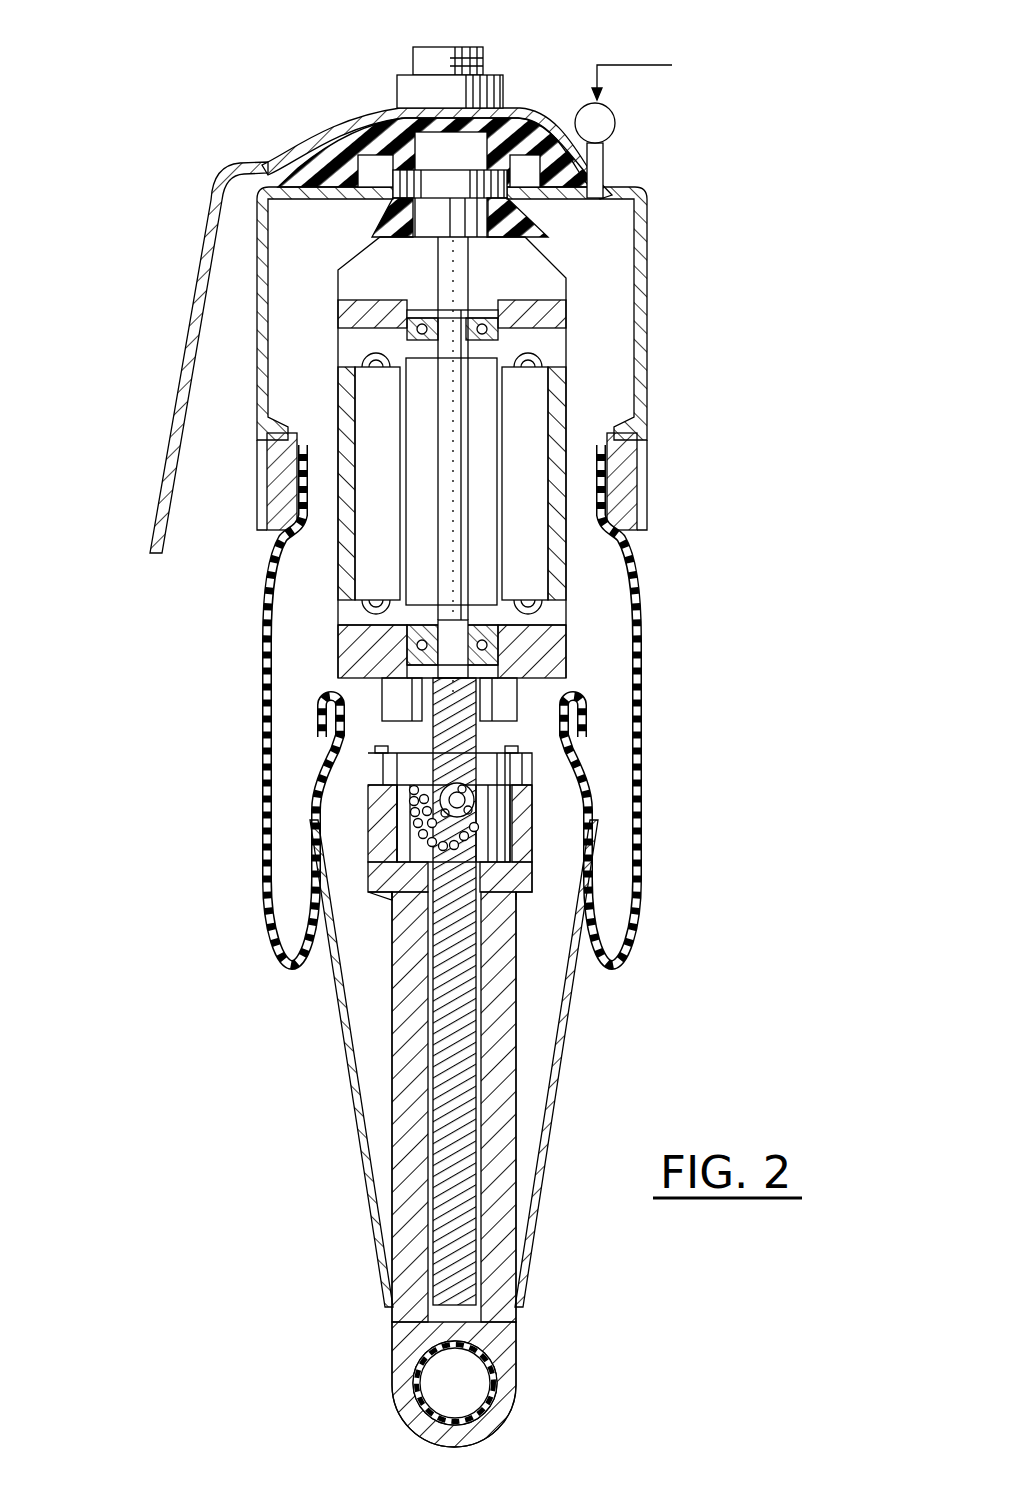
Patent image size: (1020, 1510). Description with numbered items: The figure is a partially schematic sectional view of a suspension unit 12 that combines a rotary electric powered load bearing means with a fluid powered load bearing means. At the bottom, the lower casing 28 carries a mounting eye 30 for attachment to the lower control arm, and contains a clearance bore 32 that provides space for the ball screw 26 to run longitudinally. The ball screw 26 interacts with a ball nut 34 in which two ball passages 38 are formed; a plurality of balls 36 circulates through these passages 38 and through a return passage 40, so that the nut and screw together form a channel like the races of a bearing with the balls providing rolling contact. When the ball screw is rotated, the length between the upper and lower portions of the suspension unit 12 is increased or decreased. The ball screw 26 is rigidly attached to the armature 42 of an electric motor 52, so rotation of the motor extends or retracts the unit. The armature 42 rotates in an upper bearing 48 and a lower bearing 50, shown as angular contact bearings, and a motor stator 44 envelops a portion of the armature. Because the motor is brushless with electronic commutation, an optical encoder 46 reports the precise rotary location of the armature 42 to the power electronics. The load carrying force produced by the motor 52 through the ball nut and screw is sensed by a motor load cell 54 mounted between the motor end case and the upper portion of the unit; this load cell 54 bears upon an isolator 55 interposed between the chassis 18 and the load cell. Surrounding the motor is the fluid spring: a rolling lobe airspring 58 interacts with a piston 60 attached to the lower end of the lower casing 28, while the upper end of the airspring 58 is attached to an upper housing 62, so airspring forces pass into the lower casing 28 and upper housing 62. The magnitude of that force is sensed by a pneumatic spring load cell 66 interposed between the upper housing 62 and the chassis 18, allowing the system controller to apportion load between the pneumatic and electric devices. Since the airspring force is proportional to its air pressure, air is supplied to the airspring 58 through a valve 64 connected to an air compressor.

The suspension unit 12 is at (240, 658).
The chassis 18 is at (187, 339).
The ball screw 26 is at (437, 1012).
The lower casing 28 is at (398, 1328).
The mounting eye 30 is at (496, 1385).
The clearance bore 32 is at (480, 1070).
The ball nut 34 is at (503, 800).
The balls 36 is at (455, 845).
The ball passages 38 is at (413, 790).
The return passage 40 is at (397, 825).
The armature 42 is at (475, 450).
The motor stator 44 is at (530, 482).
The optical encoder 46 is at (507, 703).
The upper bearing 48 is at (545, 330).
The lower bearing 50 is at (560, 622).
The electric motor 52 is at (577, 397).
The motor load cell 54 is at (550, 277).
The isolator 55 is at (512, 215).
The rolling lobe airspring 58 is at (270, 562).
The piston 60 is at (570, 995).
The upper housing 62 is at (257, 252).
The valve 64 is at (578, 112).
The pneumatic spring load cell 66 is at (375, 168).